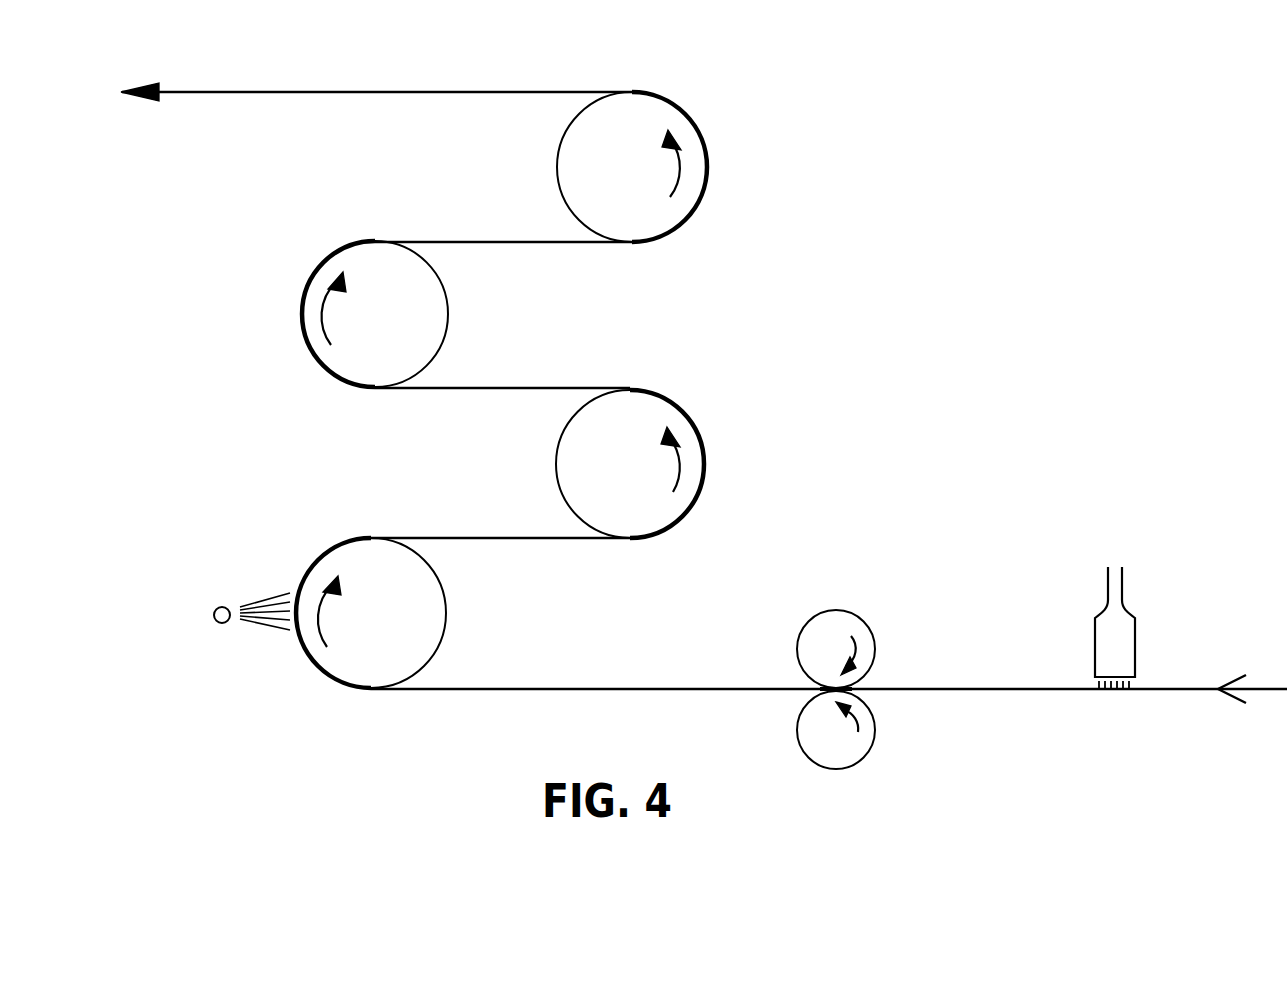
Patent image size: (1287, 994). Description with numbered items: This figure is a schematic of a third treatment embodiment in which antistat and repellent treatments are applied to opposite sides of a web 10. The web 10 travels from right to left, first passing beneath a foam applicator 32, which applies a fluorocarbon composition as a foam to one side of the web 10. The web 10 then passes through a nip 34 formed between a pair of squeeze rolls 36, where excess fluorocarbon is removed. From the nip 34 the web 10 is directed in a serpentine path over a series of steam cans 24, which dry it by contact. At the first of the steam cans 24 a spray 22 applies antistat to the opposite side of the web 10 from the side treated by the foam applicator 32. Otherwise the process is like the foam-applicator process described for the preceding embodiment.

The web 10 is at (225, 93).
The spray device 22 is at (221, 607).
The steam cans 24 is at (585, 170).
The foam applicator 32 is at (1094, 643).
The nip 34 is at (875, 677).
The squeeze rolls 36 is at (823, 633).